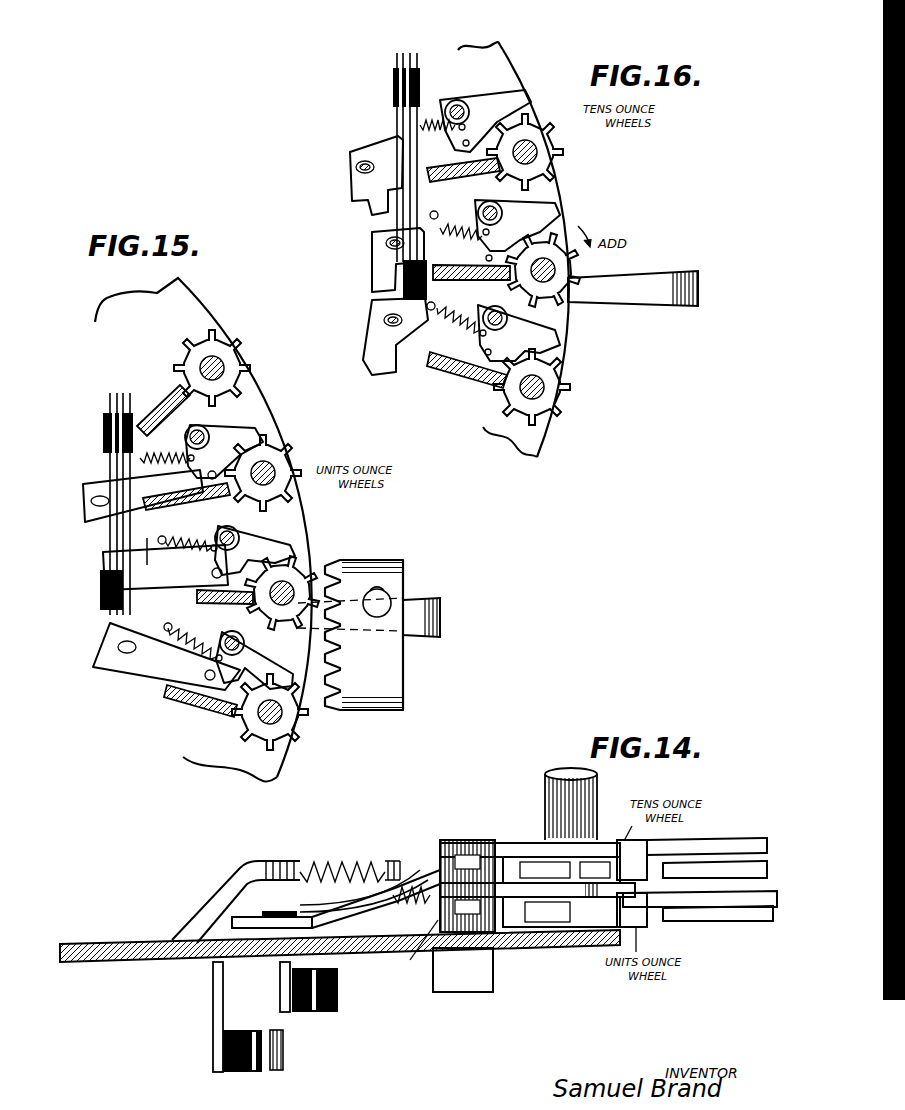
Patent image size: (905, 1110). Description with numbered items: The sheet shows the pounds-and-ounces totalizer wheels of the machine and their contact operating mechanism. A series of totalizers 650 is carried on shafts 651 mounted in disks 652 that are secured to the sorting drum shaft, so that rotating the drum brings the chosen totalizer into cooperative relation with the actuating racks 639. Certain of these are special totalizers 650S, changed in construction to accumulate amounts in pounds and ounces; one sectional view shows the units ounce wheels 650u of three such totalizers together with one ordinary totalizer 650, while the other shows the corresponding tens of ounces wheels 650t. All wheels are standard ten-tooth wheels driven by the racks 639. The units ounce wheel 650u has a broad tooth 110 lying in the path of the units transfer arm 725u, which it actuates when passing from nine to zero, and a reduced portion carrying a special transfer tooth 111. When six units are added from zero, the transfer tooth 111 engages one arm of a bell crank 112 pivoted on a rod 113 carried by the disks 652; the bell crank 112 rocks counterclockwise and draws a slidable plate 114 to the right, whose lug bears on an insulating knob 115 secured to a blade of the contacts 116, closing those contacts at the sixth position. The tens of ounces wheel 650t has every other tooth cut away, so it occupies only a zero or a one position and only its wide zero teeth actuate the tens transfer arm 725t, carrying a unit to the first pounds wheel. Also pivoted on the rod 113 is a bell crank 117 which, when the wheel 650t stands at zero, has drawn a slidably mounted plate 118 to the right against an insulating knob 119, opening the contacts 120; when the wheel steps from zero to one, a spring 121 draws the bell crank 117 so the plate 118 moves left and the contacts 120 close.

In FIG. 14, the broad tooth 110 is at (546, 905).
In FIG. 14, the transfer tooth 111 is at (626, 892).
In FIG. 15, the bell crank 112 is at (276, 550).
In FIG. 14, the bell crank 112 is at (490, 905).
In FIG. 16, the rod 113 is at (455, 103).
In FIG. 15, the rod 113 is at (229, 530).
In FIG. 14, the rod 113 is at (411, 949).
In FIG. 15, the slidable plate 114 is at (173, 556).
In FIG. 14, the slidable plate 114 is at (318, 925).
In FIG. 15, the insulating knob 115 is at (104, 600).
In FIG. 14, the insulating knob 115 is at (236, 1073).
In FIG. 15, the contacts 116 is at (126, 595).
In FIG. 14, the contacts 116 is at (275, 1068).
In FIG. 16, the bell crank 117 is at (560, 207).
In FIG. 14, the bell crank 117 is at (520, 840).
In FIG. 16, the slidably mounted plate 118 is at (440, 232).
In FIG. 14, the slidably mounted plate 118 is at (330, 851).
In FIG. 16, the insulating knob 119 is at (402, 295).
In FIG. 16, the contacts 120 is at (403, 212).
In FIG. 14, the contacts 120 is at (323, 1010).
In FIG. 16, the spring 121 is at (445, 244).
In FIG. 15, the actuating rack 639 is at (392, 688).
In FIG. 14, the actuating rack 639 is at (710, 870).
In FIG. 15, the totalizer 650 is at (240, 360).
In FIG. 15, the units ounce wheel 650u is at (278, 450).
In FIG. 14, the units ounce wheel 650u is at (582, 918).
In FIG. 16, the tens of ounces wheel 650t is at (508, 280).
In FIG. 14, the tens of ounces wheel 650t is at (508, 852).
In FIG. 16, the special totalizer 650S is at (575, 150).
In FIG. 15, the special totalizer 650S is at (300, 455).
In FIG. 15, the shaft 651 is at (216, 362).
In FIG. 16, the disk 652 is at (546, 436).
In FIG. 15, the disk 652 is at (196, 310).
In FIG. 14, the disk 652 is at (377, 947).
In FIG. 15, the units transfer arm 725u is at (425, 605).
In FIG. 14, the units transfer arm 725u is at (753, 908).
In FIG. 16, the tens transfer arm 725t is at (634, 292).
In FIG. 14, the tens transfer arm 725t is at (688, 848).